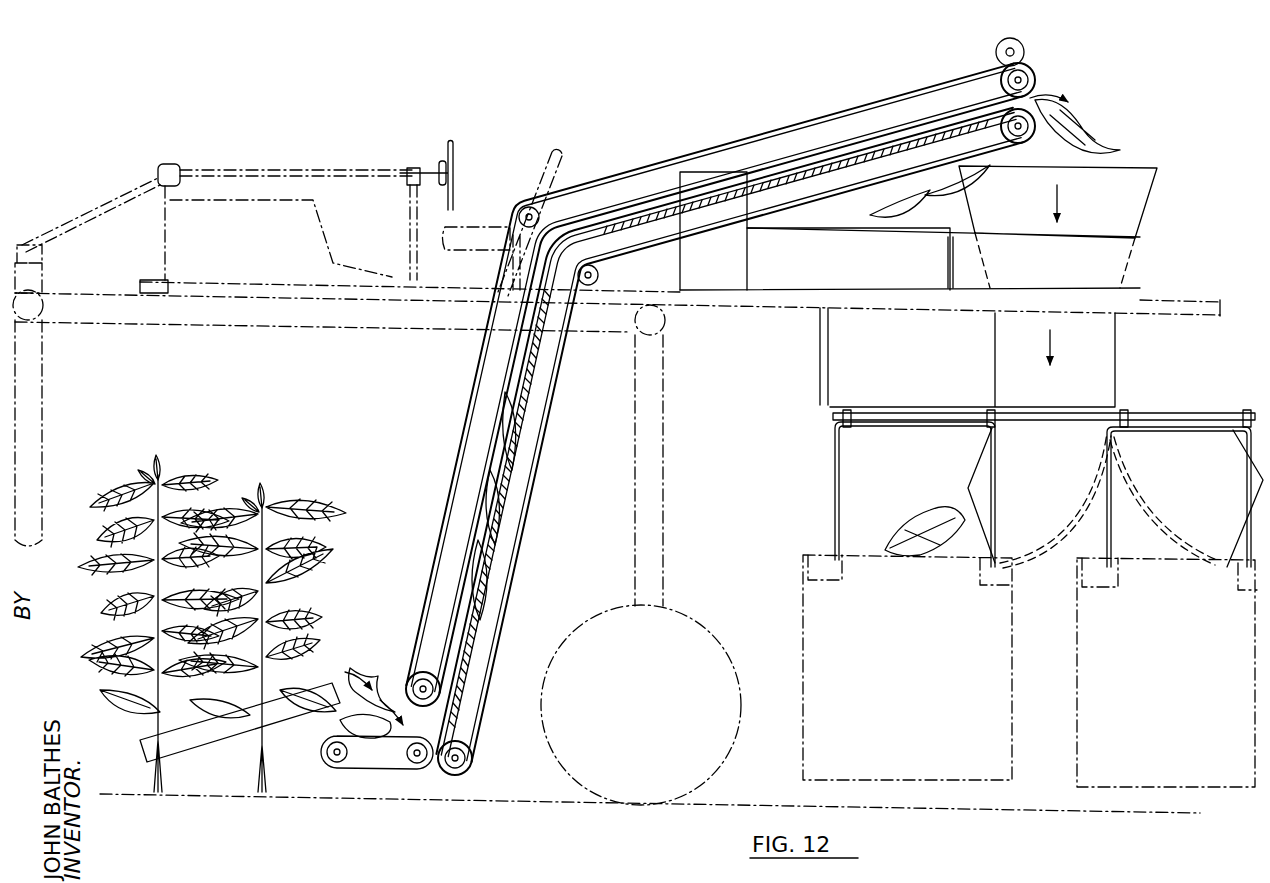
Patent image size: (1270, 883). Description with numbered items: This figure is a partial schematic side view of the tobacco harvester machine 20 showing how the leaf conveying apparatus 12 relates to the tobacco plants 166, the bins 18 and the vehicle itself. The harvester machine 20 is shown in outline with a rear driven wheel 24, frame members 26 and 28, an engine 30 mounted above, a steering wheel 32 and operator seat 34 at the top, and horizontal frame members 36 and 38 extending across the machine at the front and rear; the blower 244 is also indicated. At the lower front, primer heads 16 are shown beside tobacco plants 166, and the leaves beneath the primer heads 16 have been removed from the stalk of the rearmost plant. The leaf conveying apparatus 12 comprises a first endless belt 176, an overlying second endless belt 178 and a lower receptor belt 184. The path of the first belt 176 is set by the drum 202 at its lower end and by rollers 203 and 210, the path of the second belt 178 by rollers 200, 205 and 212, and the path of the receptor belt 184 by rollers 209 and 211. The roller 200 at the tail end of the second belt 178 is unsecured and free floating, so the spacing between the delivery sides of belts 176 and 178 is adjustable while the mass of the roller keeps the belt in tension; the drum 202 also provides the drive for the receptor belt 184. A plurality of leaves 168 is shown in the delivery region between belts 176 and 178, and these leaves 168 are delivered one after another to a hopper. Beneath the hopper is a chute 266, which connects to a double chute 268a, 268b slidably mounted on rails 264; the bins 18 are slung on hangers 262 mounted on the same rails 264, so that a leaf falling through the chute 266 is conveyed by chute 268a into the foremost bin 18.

The leaf conveying apparatus 12 is at (730, 421).
The head 16 is at (226, 742).
The bin 18 is at (930, 682).
The tobacco harvester machine 20 is at (112, 182).
The rear driven wheel 24 is at (698, 640).
The frame member 26 is at (44, 413).
The frame member 28 is at (662, 408).
The engine 30 is at (312, 228).
The steering wheel 32 is at (446, 152).
The operator seat 34 is at (556, 153).
The horizontal frame member 36 is at (46, 300).
The rear frame member 38 is at (667, 322).
The tobacco plant 166 is at (92, 512).
The leaf 168 is at (1075, 142).
The first endless belt 176 is at (530, 522).
The second endless belt 178 is at (452, 462).
The receptor belt 184 is at (352, 770).
The roller 200 is at (410, 682).
The drum 202 is at (474, 764).
The roller 203 is at (600, 276).
The roller 205 is at (519, 213).
The roller 209 is at (452, 770).
The roller 210 is at (1016, 140).
The roller 211 is at (322, 752).
The roller 212 is at (1030, 80).
The blower 244 is at (745, 256).
The hanger 262 is at (840, 452).
The rail 264 is at (1210, 414).
The chute 266 is at (1100, 362).
The double chute portion 268a is at (1071, 464).
The double chute portion 268b is at (1220, 511).